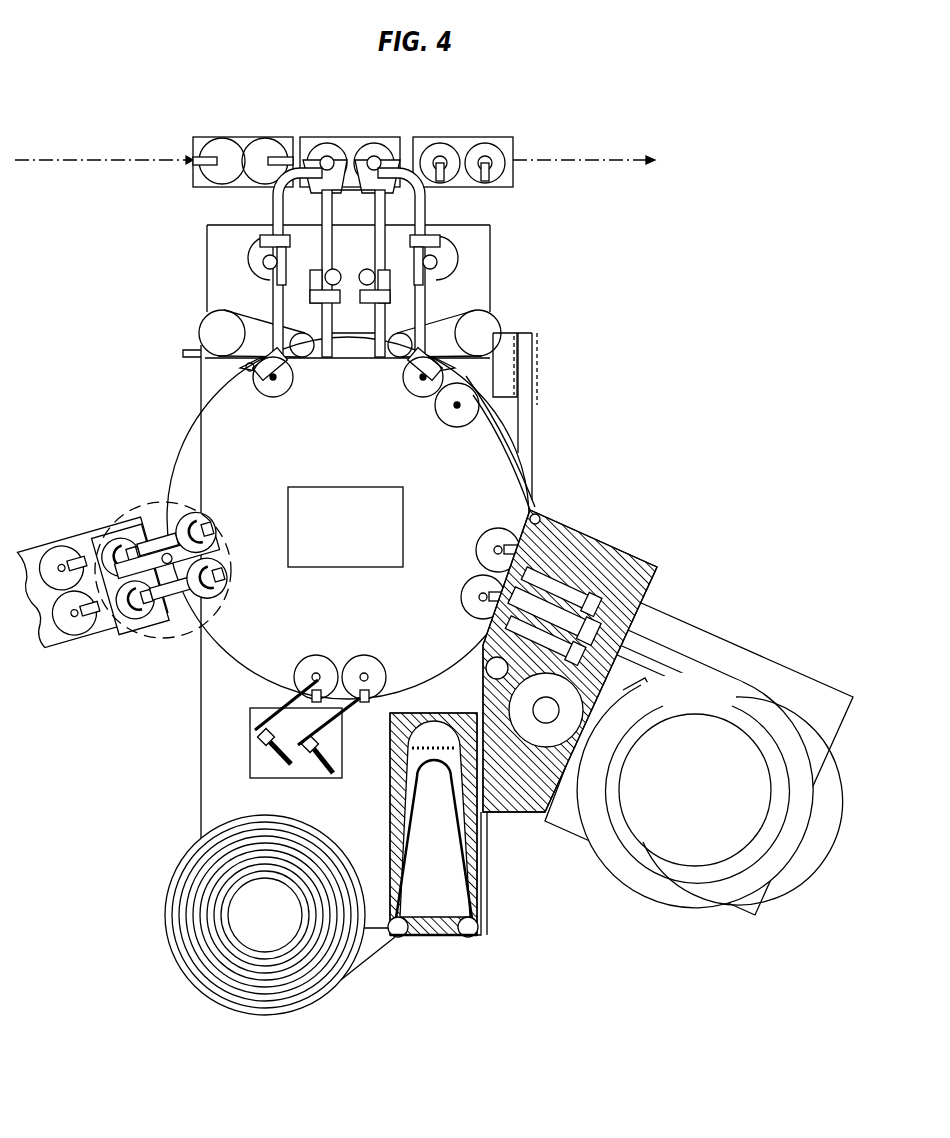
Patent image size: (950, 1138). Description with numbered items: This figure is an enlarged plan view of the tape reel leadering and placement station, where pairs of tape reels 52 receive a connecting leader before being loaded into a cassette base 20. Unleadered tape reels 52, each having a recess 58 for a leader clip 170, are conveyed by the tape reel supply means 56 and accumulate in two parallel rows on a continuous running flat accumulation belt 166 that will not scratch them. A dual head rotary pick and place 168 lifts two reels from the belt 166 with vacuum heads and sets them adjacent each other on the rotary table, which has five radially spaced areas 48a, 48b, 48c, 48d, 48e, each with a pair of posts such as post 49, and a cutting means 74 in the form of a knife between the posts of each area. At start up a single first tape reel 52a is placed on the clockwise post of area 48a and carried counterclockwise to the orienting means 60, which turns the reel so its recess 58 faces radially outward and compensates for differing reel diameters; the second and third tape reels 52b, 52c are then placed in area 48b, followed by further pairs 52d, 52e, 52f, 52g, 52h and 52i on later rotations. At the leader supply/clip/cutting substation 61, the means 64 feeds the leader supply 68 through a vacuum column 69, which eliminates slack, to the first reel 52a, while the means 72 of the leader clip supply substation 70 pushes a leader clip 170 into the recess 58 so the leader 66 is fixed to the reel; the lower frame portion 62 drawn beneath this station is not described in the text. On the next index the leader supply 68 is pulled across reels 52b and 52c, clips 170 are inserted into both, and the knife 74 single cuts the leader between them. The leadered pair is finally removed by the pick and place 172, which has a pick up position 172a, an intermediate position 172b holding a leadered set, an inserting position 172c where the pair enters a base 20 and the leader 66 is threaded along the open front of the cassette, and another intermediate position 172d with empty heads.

The base 20 is at (222, 138).
The position for inserting a leadered set 172c is at (325, 138).
The pick and place 172 is at (273, 212).
The leader 66 is at (340, 190).
The intermediate position with empty heads 172d is at (364, 270).
The intermediate position with a leadered set 172b is at (258, 255).
The position where a leadered set is picked up 172a is at (408, 380).
The cutting means 74 is at (240, 372).
The post 49 is at (240, 414).
The first tape reel 52a is at (283, 392).
The second tape reel 52b is at (413, 392).
The third tape reel 52c is at (464, 420).
The tape reel 52d is at (492, 535).
The tape reel 52e is at (468, 592).
The tape reel 52f is at (380, 660).
The tape reel 52g is at (305, 660).
The tape reel 52h is at (225, 586).
The tape reel 52i is at (200, 514).
The tape reels 52 is at (50, 546).
The area of the rotary table 48a is at (252, 397).
The area of the rotary table 48b is at (430, 405).
The area of the rotary table 48c is at (478, 568).
The area of the rotary table 48d is at (344, 665).
The area of the rotary table 48e is at (216, 556).
The dual head rotary pick and place 168 is at (160, 502).
The tape reel supply means 56 is at (118, 634).
The flat accumulation belt 166 is at (38, 650).
The leader clip 170 is at (527, 520).
The means for applying the leader clip 72 is at (565, 525).
The leader supply/clip/cutting substation 61 is at (672, 588).
The recess 58 is at (298, 684).
The means for orienting 60 is at (262, 766).
The vacuum column 69 is at (398, 830).
The means for feeding the leader supply 64 is at (522, 818).
The lower frame 62 is at (520, 855).
The leader clip supply substation 70 is at (770, 788).
The leader supply 68 is at (167, 915).